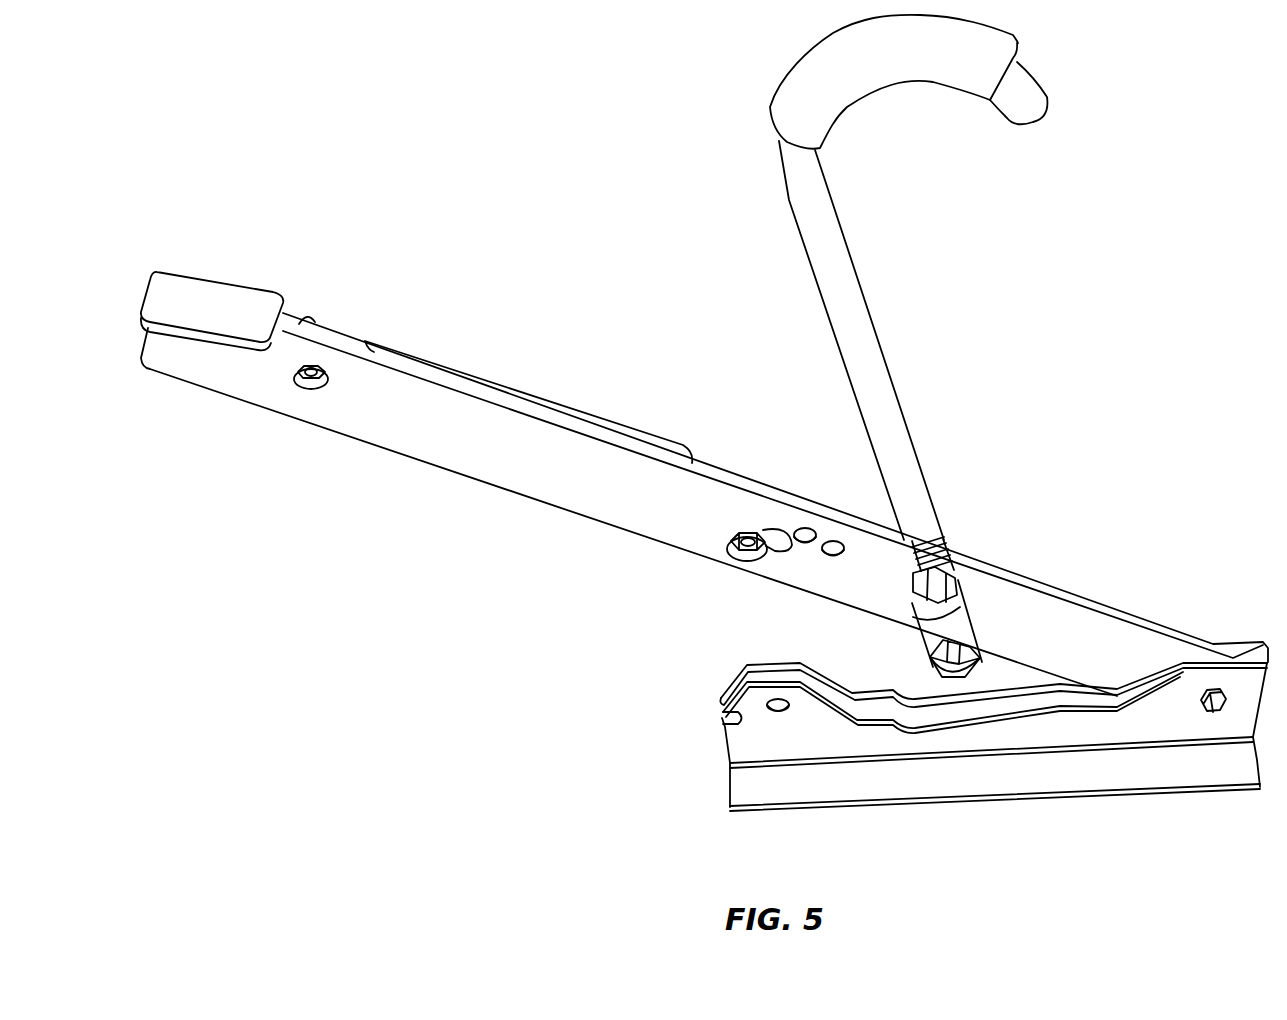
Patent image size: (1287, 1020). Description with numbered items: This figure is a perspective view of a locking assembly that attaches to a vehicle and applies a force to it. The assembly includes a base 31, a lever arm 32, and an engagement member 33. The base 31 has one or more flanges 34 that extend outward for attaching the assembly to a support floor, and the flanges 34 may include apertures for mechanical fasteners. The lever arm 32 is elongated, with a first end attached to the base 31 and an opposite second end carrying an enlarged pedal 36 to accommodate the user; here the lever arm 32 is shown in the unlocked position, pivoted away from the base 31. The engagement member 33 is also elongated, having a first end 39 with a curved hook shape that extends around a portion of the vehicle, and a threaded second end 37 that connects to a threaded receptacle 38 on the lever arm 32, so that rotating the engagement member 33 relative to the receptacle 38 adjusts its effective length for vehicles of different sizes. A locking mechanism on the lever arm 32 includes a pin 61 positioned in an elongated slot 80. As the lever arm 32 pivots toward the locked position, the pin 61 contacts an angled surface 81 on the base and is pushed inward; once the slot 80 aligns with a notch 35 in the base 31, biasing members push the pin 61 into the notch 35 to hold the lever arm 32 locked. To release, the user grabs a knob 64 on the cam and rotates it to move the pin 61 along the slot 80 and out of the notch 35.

The base 31 is at (1040, 732).
The lever arm 32 is at (503, 453).
The engagement member 33 is at (875, 393).
The flanges 34 is at (745, 793).
The notch 35 is at (723, 718).
The pedal 36 is at (208, 300).
The threaded end of handle rod 37 is at (940, 555).
The threaded receptacle 38 is at (950, 630).
The first end 39 is at (832, 60).
The pin 61 is at (747, 557).
The knob 64 is at (312, 323).
The elongated slot 80 is at (780, 530).
The angled surface 81 is at (733, 682).